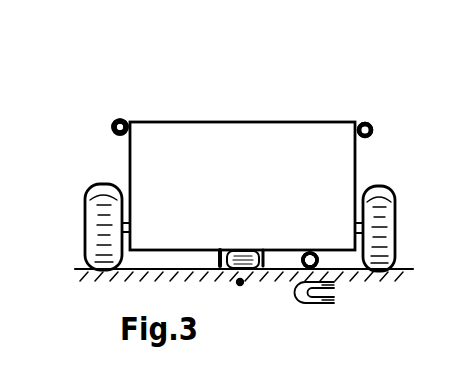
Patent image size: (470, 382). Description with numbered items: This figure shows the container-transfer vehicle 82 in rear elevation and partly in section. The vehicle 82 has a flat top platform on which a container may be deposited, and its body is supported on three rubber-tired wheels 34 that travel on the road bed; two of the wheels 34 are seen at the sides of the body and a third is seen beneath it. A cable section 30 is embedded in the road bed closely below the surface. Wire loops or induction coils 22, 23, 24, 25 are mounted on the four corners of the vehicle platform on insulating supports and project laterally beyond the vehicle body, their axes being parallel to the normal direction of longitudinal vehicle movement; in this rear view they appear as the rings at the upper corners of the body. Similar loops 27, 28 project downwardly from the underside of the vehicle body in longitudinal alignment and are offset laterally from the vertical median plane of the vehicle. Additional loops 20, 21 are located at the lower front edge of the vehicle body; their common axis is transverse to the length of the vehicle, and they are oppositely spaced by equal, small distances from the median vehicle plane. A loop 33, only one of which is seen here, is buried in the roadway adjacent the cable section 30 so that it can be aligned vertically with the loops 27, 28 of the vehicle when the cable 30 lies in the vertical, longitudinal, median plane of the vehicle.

The vehicle 82 is at (229, 121).
The wire loop or induction coil 22 is at (115, 121).
The wire loop or induction coil 23 is at (120, 127).
The wire loop or induction coil 24 is at (371, 124).
The wire loop or induction coil 25 is at (365, 130).
The rubber-tired wheel 34 is at (102, 183).
The loop 20 is at (218, 270).
The cable section 30 is at (242, 286).
The loop 21 is at (302, 268).
The loop 27 is at (319, 266).
The loop 28 is at (310, 260).
The loop 33 is at (304, 302).